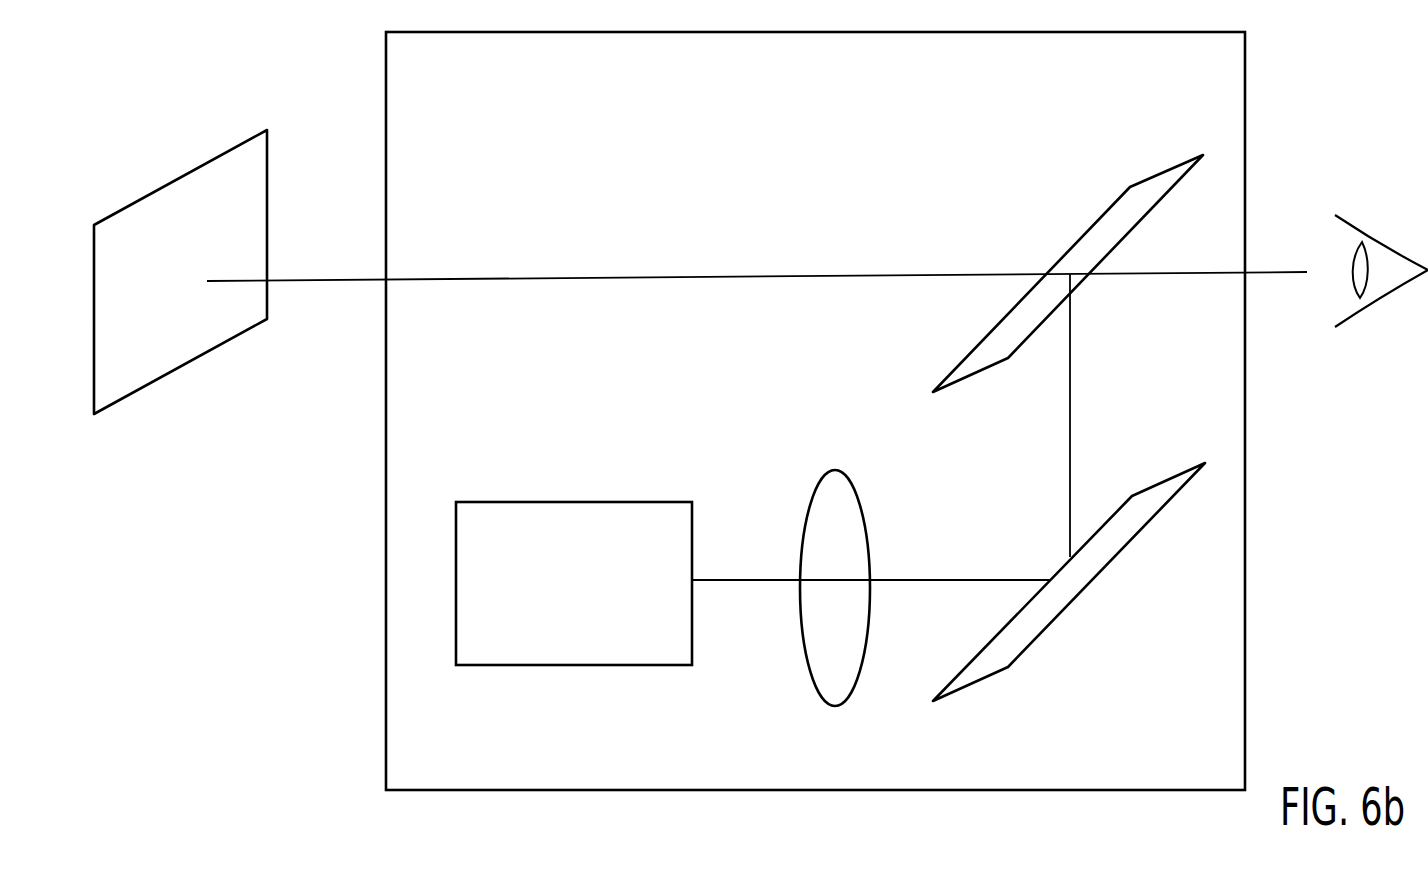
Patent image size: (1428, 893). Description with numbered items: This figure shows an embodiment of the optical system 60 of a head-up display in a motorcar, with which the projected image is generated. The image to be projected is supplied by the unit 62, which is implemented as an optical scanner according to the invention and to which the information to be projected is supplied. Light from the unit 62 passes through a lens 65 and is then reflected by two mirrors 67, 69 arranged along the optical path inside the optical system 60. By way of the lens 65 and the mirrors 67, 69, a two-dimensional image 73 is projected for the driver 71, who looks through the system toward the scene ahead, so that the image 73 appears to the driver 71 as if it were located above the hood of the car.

The optical system 60 is at (470, 790).
The unit 62 is at (537, 653).
The lens 65 is at (830, 692).
The mirror 67 is at (1047, 612).
The mirror 69 is at (987, 353).
The driver 71 is at (1380, 283).
The two-dimensional image 73 is at (195, 337).